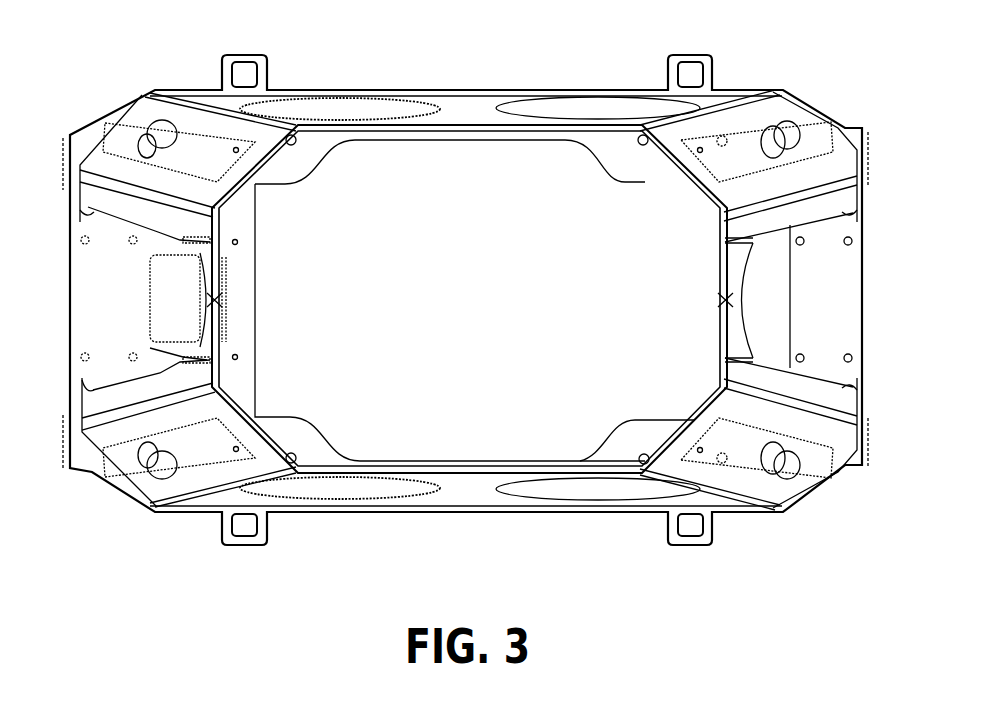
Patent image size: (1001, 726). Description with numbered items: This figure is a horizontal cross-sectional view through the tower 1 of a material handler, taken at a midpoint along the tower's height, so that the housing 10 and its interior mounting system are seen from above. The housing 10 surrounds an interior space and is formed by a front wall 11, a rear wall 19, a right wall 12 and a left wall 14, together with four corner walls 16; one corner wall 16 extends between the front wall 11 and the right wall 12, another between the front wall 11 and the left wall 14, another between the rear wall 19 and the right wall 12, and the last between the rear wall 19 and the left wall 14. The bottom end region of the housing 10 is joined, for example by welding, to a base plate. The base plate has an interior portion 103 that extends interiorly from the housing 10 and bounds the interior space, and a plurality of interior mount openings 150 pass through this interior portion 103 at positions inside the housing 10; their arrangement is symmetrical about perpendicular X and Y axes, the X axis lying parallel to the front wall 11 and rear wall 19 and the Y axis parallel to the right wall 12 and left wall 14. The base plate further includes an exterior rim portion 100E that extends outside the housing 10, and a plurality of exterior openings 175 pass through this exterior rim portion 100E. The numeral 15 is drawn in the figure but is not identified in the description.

The tower 1 is at (172, 602).
The housing 10 is at (692, 210).
The front wall 11 is at (482, 508).
The right wall 12 is at (95, 410).
The left wall 14 is at (847, 406).
The bottom web member 15 is at (460, 492).
The corner wall 16 is at (148, 118).
The rear wall 19 is at (469, 78).
The exterior rim portion 100E is at (302, 95).
The interior portion 103 is at (430, 140).
The interior mount openings 150 is at (296, 145).
The exterior openings 175 is at (247, 68).